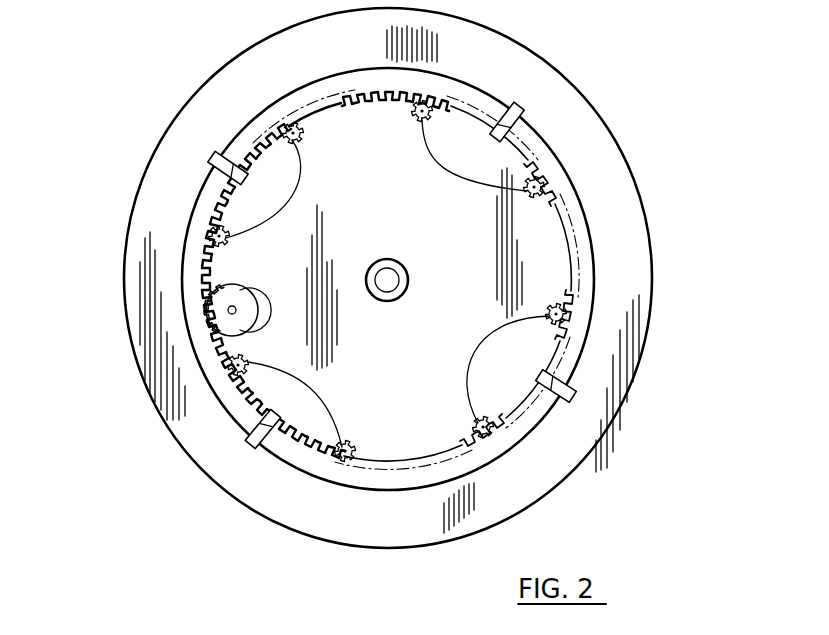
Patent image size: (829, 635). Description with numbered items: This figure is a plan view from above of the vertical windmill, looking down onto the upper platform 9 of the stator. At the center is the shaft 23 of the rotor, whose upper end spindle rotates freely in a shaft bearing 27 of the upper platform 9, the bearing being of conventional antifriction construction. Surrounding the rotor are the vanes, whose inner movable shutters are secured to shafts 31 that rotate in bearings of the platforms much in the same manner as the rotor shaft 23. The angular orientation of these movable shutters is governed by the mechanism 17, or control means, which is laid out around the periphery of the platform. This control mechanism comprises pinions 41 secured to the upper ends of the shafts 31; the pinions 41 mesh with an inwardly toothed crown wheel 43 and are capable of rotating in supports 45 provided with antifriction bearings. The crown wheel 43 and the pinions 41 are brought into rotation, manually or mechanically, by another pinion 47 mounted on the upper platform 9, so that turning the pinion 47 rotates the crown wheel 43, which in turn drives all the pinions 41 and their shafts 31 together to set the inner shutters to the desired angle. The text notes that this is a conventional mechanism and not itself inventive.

The upper platform 9 is at (600, 152).
The mechanism 17 is at (593, 214).
The shaft 23 is at (397, 268).
The shaft bearing 27 is at (392, 356).
The shafts 31 is at (226, 228).
The pinions 41 is at (388, 283).
The inwardly toothed crown wheel 43 is at (532, 130).
The supports 45 is at (225, 165).
The pinion 47 is at (214, 312).